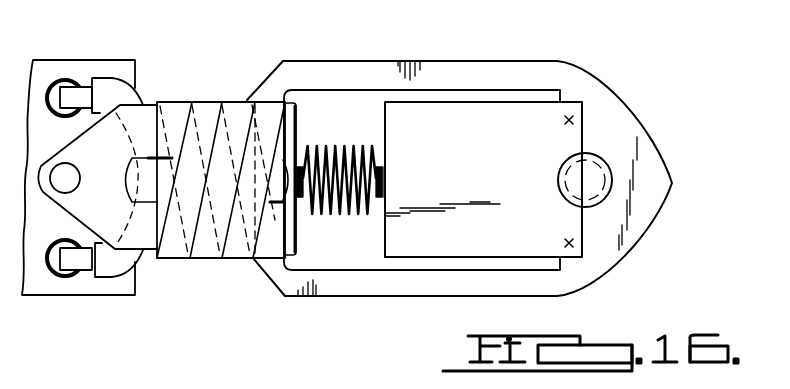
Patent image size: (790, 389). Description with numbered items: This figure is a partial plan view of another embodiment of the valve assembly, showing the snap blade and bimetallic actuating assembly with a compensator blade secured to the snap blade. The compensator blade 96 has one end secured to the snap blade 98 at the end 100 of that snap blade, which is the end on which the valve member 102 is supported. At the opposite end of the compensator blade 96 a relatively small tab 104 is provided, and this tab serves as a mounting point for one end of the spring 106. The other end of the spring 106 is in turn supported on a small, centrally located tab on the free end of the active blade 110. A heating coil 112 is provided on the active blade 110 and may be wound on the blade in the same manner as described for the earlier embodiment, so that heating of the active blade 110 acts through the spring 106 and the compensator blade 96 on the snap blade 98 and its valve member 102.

The compensator blade 96 is at (495, 182).
The snap blade 98 is at (361, 283).
The end of snap blade 100 is at (648, 195).
The valve member 102 is at (598, 175).
The tab 104 is at (385, 178).
The spring 106 is at (334, 143).
The active blade 110 is at (143, 110).
The heating coil 112 is at (203, 106).